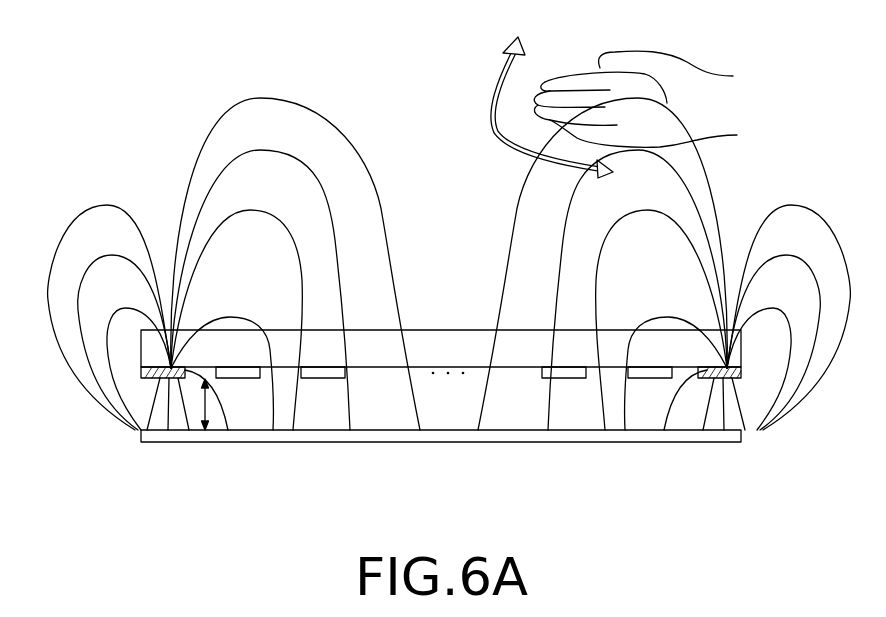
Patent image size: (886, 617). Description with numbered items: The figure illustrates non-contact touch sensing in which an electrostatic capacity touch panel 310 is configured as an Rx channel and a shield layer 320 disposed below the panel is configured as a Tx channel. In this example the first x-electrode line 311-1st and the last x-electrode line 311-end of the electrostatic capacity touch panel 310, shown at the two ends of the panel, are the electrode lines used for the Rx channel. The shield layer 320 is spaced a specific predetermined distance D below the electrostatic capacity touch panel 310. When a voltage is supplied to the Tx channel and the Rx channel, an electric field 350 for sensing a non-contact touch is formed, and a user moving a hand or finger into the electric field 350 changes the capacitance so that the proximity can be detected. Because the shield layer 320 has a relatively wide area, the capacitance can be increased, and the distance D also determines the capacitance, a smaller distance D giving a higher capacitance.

The electric field 350 is at (272, 97).
The electrostatic capacity touch panel 310 is at (432, 328).
The shield layer 320 is at (537, 442).
The first x-electrode line 311-1st is at (140, 372).
The last x-electrode line 311-end is at (741, 372).
The distance D is at (208, 402).